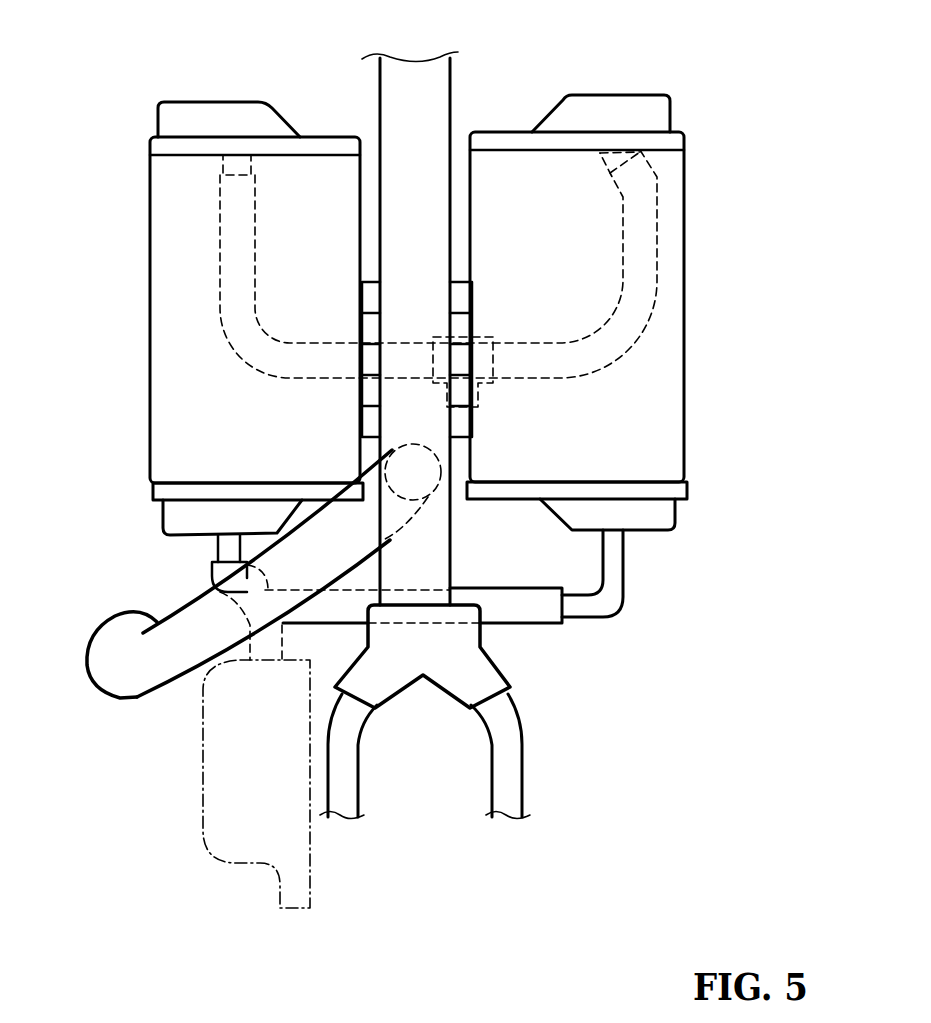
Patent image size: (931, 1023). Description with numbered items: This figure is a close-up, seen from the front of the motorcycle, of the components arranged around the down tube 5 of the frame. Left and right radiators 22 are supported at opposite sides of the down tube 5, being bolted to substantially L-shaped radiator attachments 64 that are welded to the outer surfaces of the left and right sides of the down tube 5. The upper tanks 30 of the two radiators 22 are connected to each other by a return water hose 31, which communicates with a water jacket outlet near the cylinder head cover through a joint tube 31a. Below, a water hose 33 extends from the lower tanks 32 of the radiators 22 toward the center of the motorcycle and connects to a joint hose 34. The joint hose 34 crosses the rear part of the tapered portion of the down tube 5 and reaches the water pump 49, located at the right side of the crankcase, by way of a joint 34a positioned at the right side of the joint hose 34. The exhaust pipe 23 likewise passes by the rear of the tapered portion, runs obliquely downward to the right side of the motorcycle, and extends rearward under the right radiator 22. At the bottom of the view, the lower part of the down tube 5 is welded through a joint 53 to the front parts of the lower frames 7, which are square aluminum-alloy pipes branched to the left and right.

The down tube 5 is at (433, 90).
The lower frames 7 is at (348, 775).
The radiators 22 is at (152, 352).
The exhaust pipe 23 is at (120, 705).
The upper tanks 30 is at (158, 115).
The return water hose 31 is at (290, 378).
The joint tube 31a is at (482, 400).
The lower tanks 32 is at (163, 517).
The water hose 33 is at (207, 545).
The joint hose 34 is at (545, 625).
The joint 34a is at (262, 650).
The water pump 49 is at (215, 815).
The joint 53 is at (402, 660).
The radiator attachments 64 is at (450, 258).